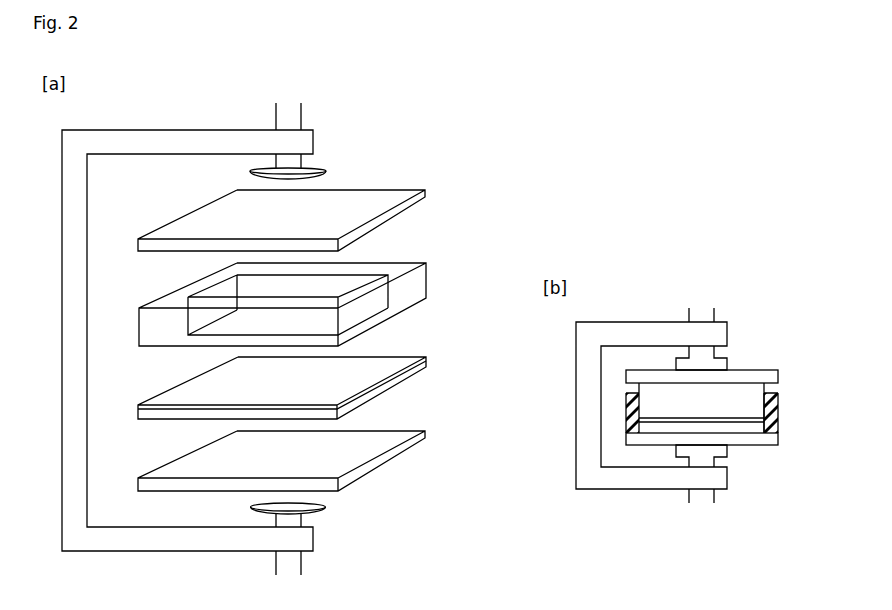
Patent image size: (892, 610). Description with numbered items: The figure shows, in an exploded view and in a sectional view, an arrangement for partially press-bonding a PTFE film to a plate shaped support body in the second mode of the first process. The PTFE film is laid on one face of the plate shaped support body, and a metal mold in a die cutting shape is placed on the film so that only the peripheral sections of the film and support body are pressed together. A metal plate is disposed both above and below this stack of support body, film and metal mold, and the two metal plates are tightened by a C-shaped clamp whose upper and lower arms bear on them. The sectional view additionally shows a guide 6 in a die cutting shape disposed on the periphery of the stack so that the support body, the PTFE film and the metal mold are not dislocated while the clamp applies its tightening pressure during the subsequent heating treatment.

The guide 6 is at (775, 425).